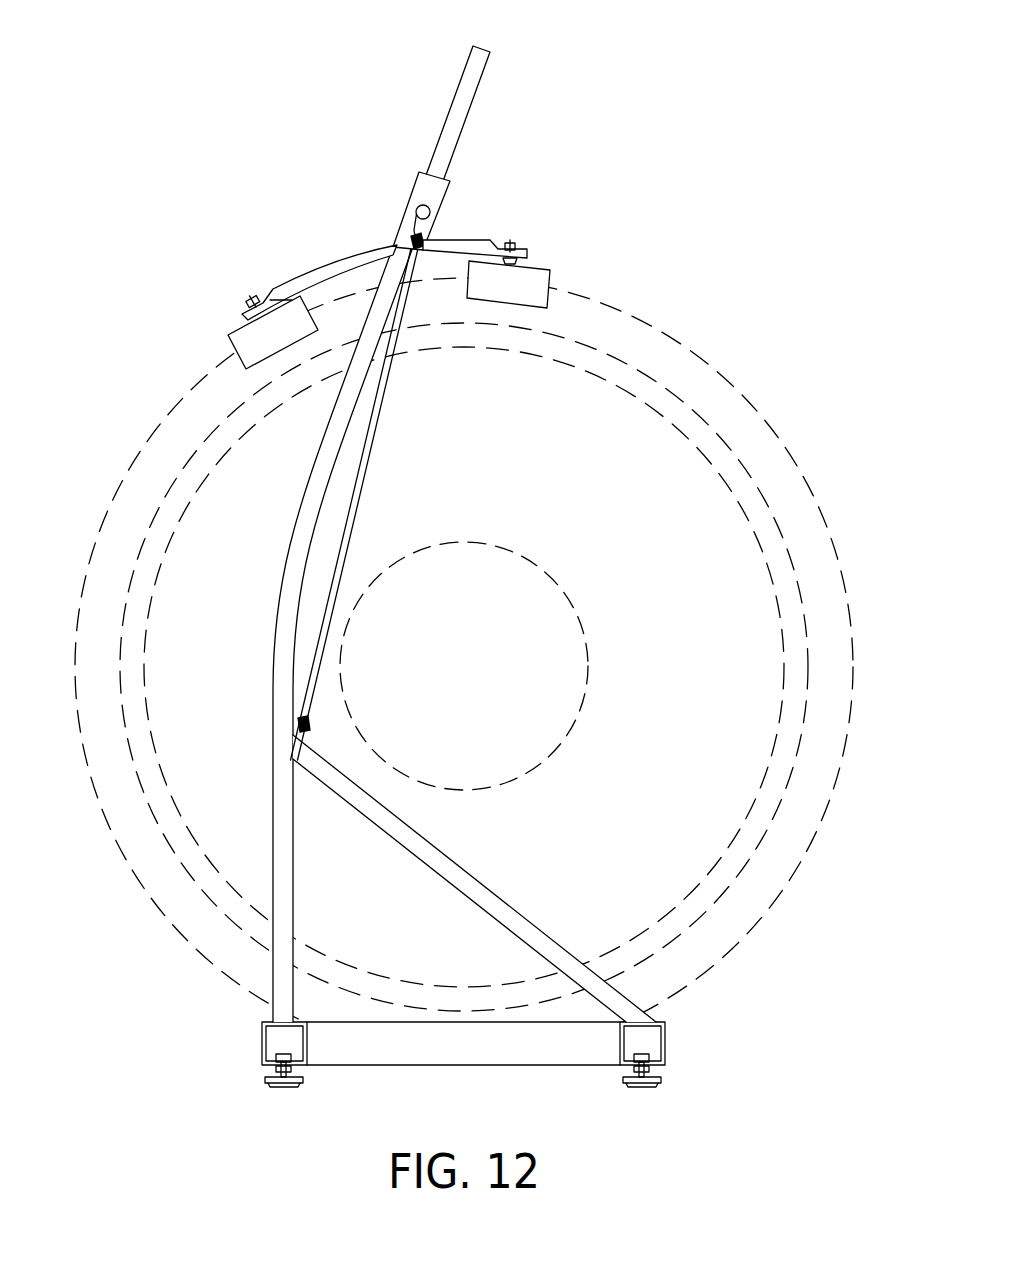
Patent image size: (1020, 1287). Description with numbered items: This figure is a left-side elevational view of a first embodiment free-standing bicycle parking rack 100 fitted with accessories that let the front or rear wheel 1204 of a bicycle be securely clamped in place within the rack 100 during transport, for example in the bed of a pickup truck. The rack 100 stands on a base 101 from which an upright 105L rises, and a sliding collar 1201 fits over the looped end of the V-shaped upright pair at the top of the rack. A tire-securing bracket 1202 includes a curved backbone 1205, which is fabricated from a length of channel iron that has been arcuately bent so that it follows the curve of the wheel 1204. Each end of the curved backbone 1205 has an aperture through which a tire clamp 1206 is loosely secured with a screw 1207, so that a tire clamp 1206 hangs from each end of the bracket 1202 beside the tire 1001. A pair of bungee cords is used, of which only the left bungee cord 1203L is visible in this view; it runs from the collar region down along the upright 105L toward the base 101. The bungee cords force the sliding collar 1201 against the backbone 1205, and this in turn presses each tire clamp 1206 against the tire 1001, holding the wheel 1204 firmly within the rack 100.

The free-standing bicycle parking rack 100 is at (455, 74).
The base 101 is at (461, 1073).
The upright support 105L is at (308, 466).
The tire 1001 is at (138, 489).
The sliding collar 1201 is at (427, 190).
The tire-securing bracket 1202 is at (370, 240).
The left bungee cord 1203L is at (370, 453).
The wheel 1204 is at (752, 380).
The curved backbone 1205 is at (313, 272).
The tire clamp 1206 is at (247, 338).
The screw 1207 is at (250, 299).